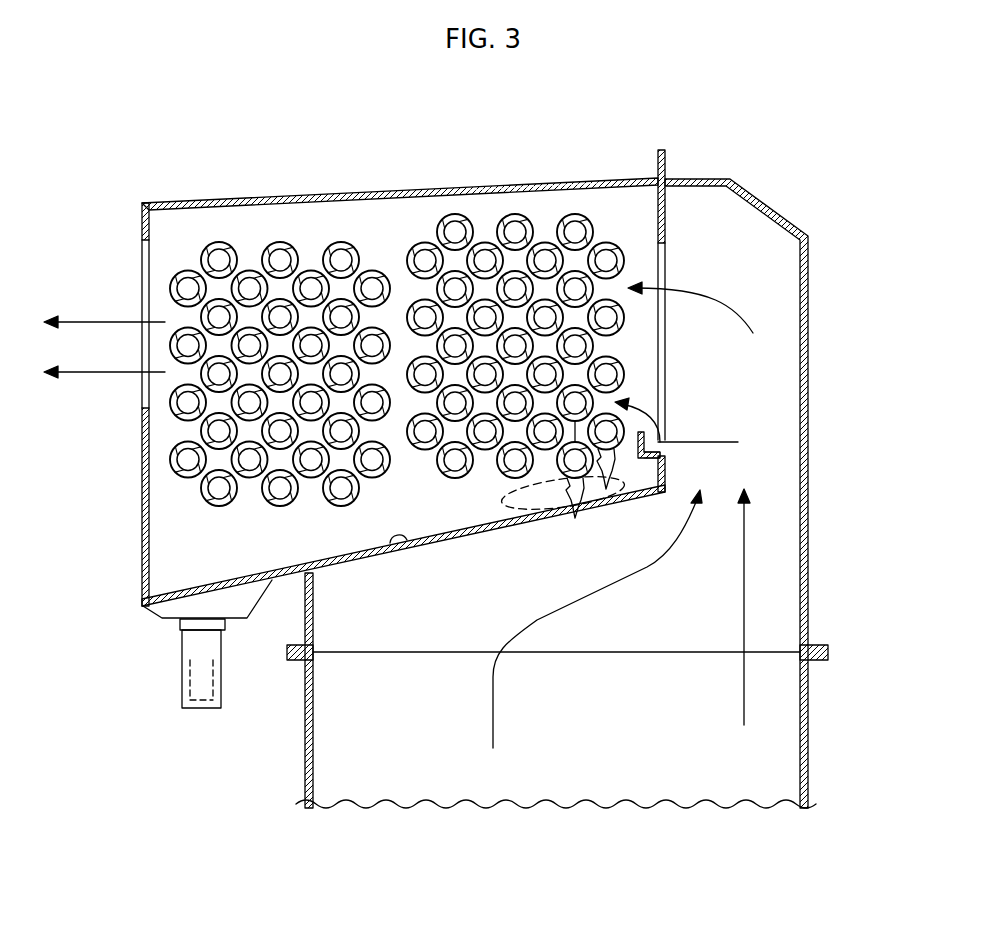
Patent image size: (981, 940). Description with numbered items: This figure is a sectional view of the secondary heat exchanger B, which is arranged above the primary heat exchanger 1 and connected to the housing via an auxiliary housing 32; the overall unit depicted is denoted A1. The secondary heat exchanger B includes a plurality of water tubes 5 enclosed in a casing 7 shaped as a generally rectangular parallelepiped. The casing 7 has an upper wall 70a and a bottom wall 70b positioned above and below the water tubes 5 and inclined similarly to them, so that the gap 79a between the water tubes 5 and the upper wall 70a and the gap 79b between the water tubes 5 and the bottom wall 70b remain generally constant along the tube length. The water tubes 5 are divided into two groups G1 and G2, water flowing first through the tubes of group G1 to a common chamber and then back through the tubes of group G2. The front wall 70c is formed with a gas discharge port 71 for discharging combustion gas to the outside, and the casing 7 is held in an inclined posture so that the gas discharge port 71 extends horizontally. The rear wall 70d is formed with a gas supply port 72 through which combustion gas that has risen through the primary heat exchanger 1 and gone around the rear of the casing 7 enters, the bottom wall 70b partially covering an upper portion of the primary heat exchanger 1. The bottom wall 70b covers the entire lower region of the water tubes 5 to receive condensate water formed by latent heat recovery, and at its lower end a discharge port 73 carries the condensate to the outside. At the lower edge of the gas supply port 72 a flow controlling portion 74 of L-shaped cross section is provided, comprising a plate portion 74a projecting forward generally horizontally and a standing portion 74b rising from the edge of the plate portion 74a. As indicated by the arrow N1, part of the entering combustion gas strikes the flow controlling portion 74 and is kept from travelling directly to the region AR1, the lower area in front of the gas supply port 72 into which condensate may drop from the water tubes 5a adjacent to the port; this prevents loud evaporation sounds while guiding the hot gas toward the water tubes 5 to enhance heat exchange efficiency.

The primary heat exchanger 1 is at (812, 710).
The auxiliary housing 32 is at (808, 520).
The heat exchanger unit A1 is at (156, 145).
The casing 7 is at (378, 190).
The upper wall 70a is at (442, 188).
The bottom wall 70b is at (404, 550).
The front wall 70c is at (142, 464).
The rear wall 70d is at (665, 228).
The gas discharge port 71 is at (142, 287).
The gas supply port 72 is at (665, 332).
The discharge port 73 is at (200, 716).
The flow controlling portion 74 is at (670, 450).
The plate portion 74a is at (643, 460).
The standing portion 74b is at (628, 460).
The gap 79a is at (513, 205).
The gap 79b is at (342, 527).
The secondary heat exchanger B is at (320, 195).
The water tubes 5 is at (597, 232).
The water tubes 5a is at (590, 405).
The group G1 is at (252, 246).
The group G2 is at (565, 211).
The arrow N1 is at (697, 441).
The region AR1 is at (500, 503).